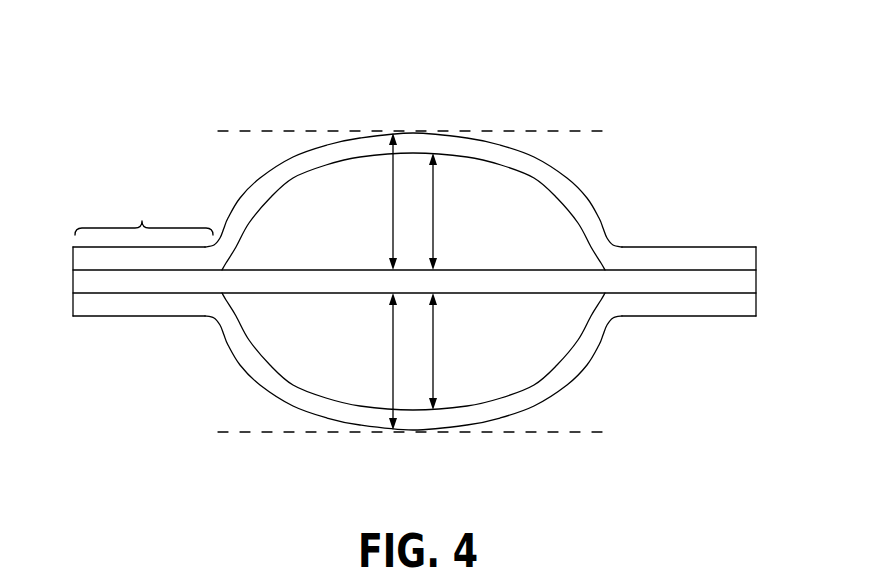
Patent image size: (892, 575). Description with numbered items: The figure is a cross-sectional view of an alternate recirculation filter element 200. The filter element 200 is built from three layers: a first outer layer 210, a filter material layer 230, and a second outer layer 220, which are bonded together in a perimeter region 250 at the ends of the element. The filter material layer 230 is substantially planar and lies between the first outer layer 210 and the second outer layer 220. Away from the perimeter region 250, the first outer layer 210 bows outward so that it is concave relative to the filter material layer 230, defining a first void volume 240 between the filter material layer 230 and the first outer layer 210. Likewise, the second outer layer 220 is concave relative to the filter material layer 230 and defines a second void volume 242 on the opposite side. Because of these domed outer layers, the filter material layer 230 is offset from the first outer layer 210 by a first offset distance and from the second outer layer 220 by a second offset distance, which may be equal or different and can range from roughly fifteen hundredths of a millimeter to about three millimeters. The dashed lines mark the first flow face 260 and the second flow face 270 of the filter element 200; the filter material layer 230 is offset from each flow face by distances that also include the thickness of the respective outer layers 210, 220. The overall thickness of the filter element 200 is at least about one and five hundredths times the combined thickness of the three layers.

The filter element 200 is at (145, 76).
The first outer layer 210 is at (742, 303).
The second outer layer 220 is at (687, 258).
The filter material layer 230 is at (748, 283).
The first void volume 240 is at (347, 377).
The second void volume 242 is at (537, 245).
The perimeter region 250 is at (144, 216).
The first flow face 260 is at (485, 448).
The second flow face 270 is at (529, 108).